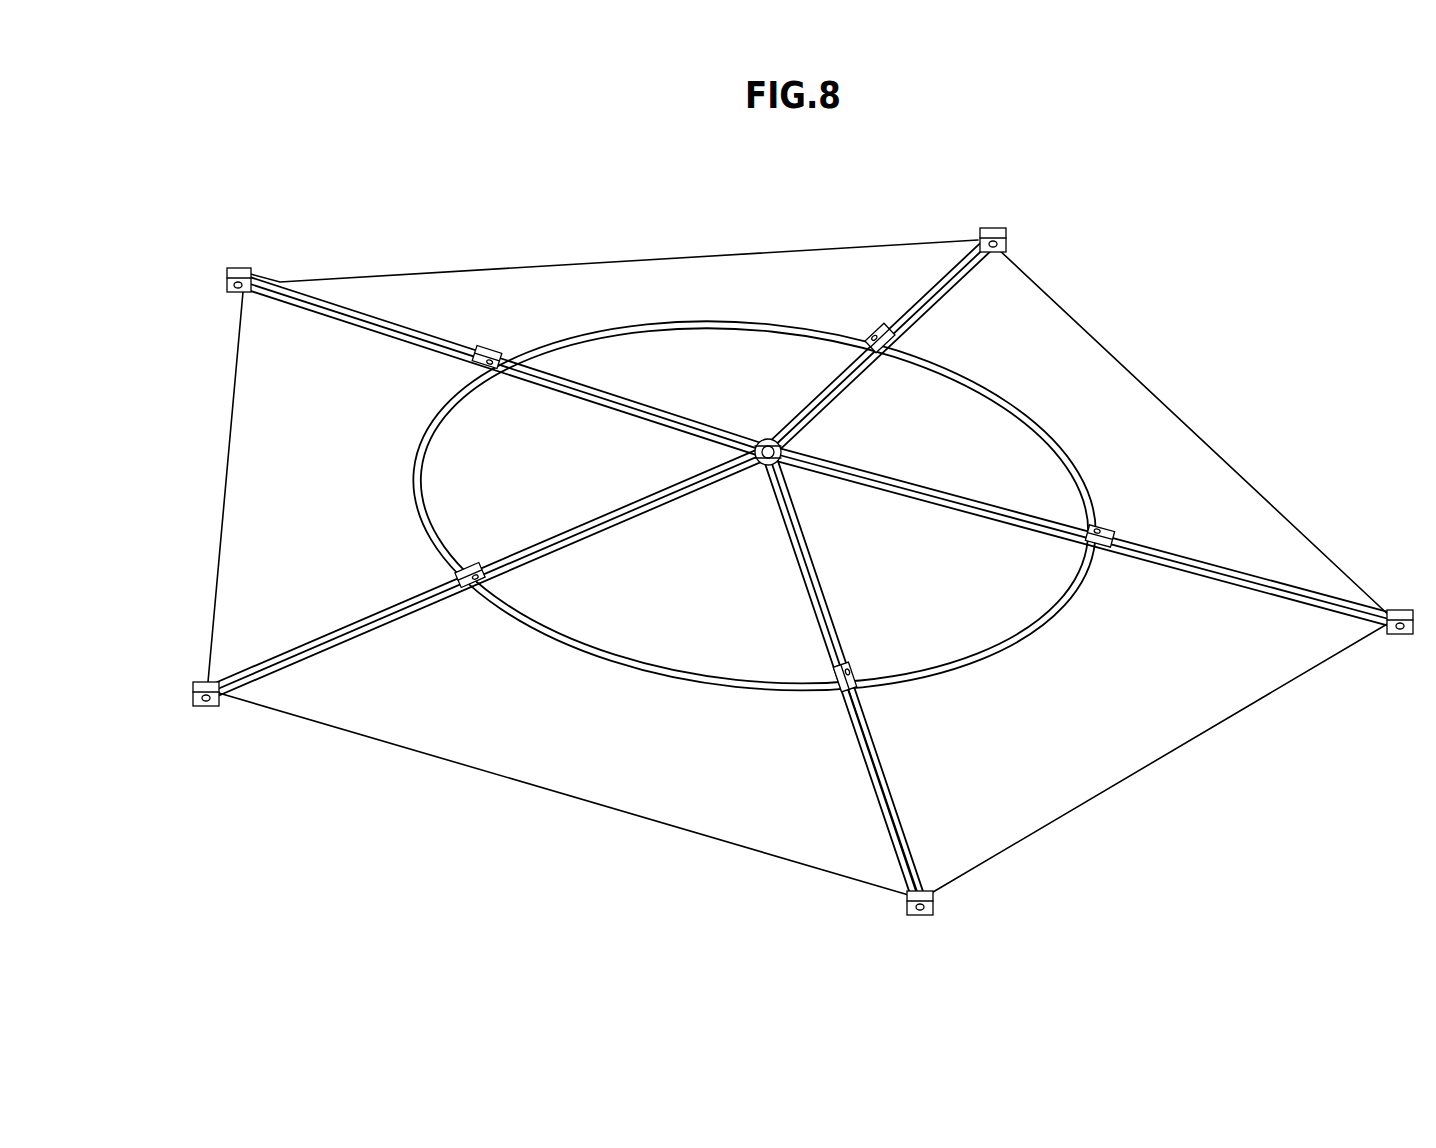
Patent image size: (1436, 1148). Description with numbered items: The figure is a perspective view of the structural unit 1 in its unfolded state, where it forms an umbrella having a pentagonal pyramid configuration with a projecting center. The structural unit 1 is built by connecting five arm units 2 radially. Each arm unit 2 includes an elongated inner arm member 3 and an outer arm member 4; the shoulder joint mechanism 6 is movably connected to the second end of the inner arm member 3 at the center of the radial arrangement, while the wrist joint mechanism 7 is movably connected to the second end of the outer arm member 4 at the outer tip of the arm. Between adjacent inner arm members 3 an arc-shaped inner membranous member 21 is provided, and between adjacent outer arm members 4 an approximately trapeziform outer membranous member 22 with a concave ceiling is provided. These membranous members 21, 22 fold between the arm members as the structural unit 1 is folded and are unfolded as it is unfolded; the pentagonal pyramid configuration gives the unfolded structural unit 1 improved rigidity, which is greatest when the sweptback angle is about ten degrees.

The structural unit 1 is at (1090, 283).
The arm unit 2 is at (858, 762).
The inner arm member 3 is at (821, 577).
The outer arm member 4 is at (890, 777).
The shoulder joint mechanism 6 is at (780, 450).
The wrist joint mechanism 7 is at (933, 903).
The inner membranous member 21 is at (707, 657).
The outer membranous member 22 is at (425, 738).